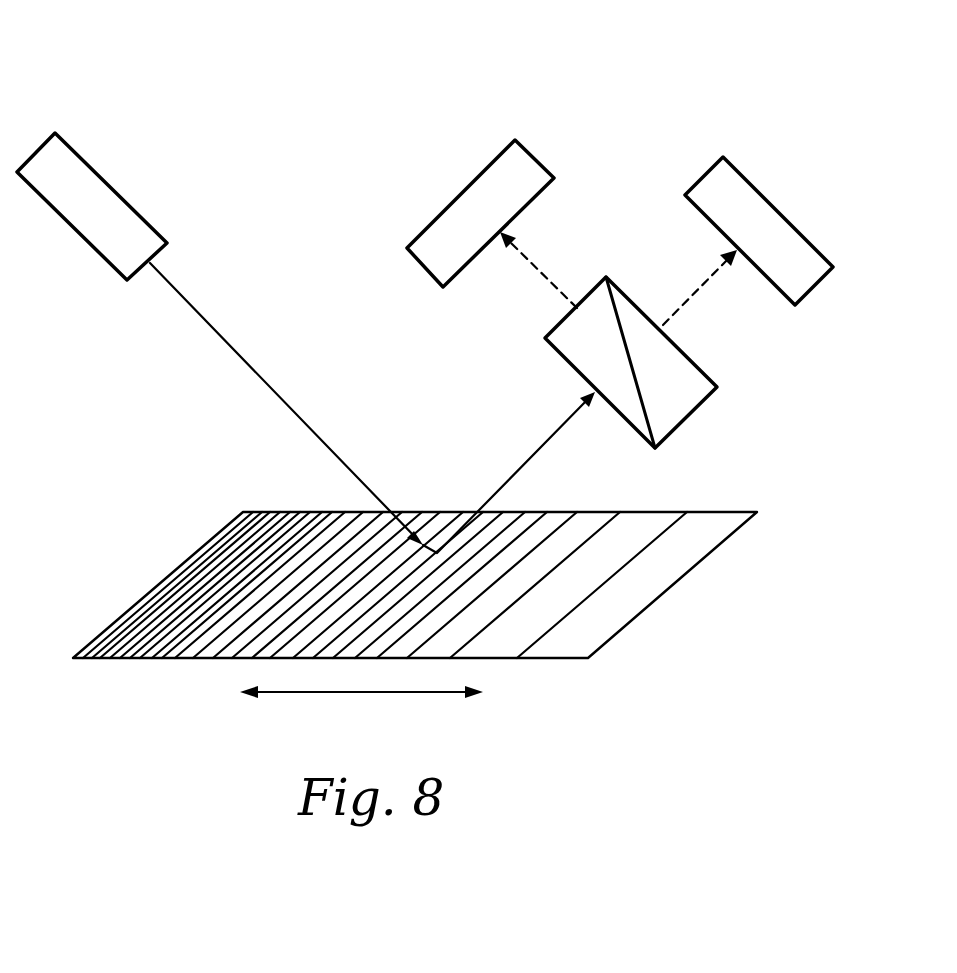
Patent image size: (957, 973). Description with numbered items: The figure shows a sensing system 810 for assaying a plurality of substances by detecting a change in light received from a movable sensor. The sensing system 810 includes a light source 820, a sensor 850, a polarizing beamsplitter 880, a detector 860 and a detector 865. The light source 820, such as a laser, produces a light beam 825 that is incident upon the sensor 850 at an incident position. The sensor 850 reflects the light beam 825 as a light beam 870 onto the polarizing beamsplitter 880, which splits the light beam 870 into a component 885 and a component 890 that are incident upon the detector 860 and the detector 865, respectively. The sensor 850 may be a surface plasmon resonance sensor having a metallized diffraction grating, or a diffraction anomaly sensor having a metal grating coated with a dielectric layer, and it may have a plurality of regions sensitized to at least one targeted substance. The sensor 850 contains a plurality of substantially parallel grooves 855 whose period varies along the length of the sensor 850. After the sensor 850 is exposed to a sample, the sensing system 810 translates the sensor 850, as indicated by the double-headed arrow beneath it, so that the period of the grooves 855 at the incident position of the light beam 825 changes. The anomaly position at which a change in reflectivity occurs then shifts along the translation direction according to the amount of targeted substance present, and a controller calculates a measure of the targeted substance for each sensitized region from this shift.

The sensing system 810 is at (286, 106).
The light source 820 is at (113, 226).
The light beam 825 is at (250, 358).
The sensor 850 is at (757, 513).
The grooves 855 is at (167, 642).
The detector 860 is at (499, 228).
The detector 865 is at (780, 245).
The light beam 870 is at (542, 452).
The polarizing beamsplitter 880 is at (697, 395).
The component 885 is at (542, 272).
The component 890 is at (688, 300).